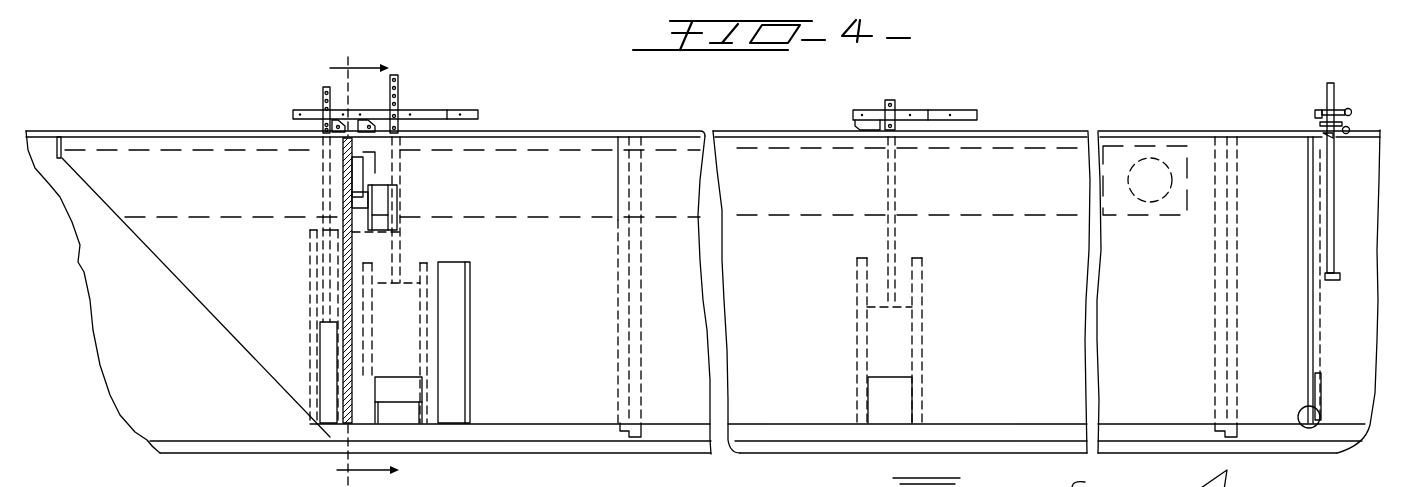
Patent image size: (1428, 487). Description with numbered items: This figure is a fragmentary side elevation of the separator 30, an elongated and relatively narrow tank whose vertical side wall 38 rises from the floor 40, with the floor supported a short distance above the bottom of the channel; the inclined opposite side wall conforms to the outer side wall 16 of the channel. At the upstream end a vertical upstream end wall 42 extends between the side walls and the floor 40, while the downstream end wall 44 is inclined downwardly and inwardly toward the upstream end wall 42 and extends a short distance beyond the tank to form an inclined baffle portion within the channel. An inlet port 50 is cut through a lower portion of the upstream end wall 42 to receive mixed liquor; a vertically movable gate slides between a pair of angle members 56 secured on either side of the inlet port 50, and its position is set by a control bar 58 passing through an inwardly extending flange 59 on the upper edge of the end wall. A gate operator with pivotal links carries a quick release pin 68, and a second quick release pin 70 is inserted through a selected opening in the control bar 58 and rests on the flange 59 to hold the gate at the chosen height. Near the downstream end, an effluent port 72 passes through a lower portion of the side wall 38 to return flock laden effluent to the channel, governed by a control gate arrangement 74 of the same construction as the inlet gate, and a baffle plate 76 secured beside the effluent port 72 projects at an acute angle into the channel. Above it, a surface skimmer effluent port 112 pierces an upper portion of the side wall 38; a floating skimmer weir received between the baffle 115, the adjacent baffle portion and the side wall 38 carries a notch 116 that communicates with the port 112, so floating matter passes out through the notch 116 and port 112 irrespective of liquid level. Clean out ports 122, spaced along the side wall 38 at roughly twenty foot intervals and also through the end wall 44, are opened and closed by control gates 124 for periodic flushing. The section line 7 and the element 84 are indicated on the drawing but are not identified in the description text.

The section line 7- 7 is at (362, 263).
The outer side wall 16 is at (1360, 295).
The separator 30 is at (1050, 127).
The side wall 38 is at (592, 413).
The floor 40 is at (770, 423).
The upstream end wall 42 is at (1315, 241).
The downstream end wall 44 is at (222, 300).
The inlet port 50 is at (1320, 422).
The angle members 56 is at (1322, 336).
The control bar 58 is at (1333, 88).
The flange 59 is at (1333, 137).
The quick release pin 68 is at (1348, 107).
The quick release pin 70 is at (1350, 125).
The effluent port 72 is at (400, 413).
The control gate arrangement 74 is at (400, 110).
The baffle plate 76 is at (448, 412).
The hinge 84 is at (1159, 478).
The surface skimmer effluent port 112 is at (348, 138).
The baffle 115 is at (387, 208).
The notch 116 is at (355, 205).
The clean out ports 122 is at (333, 425).
The control gates 124 is at (325, 112).